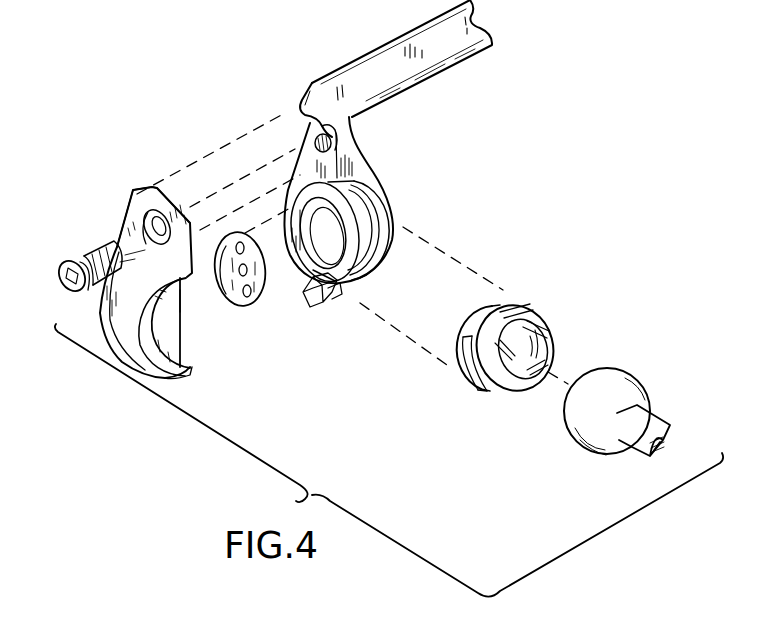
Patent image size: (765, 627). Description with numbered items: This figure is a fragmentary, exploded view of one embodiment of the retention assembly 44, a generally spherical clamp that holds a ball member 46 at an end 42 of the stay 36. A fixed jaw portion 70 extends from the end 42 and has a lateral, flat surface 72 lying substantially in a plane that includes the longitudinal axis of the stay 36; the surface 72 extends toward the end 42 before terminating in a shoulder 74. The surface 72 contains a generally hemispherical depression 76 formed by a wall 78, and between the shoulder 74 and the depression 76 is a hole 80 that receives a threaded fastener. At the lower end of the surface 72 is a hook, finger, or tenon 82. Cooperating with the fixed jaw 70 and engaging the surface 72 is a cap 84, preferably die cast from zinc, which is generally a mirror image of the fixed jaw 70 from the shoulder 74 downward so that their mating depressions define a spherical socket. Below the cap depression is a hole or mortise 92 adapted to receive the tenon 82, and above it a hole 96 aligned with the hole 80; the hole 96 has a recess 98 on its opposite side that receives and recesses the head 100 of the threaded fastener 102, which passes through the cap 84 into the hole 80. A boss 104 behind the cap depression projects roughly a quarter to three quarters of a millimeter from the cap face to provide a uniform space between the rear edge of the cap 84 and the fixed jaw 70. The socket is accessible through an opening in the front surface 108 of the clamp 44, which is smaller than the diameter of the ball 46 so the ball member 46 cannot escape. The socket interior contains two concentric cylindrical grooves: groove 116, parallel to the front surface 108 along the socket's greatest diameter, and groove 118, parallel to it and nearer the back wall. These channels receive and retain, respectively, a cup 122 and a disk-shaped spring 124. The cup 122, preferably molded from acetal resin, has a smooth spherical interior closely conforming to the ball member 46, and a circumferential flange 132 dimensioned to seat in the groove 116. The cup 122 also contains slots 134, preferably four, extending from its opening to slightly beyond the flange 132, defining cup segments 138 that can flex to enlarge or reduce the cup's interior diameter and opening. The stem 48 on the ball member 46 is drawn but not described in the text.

The stay 36 is at (443, 62).
The end 42 is at (310, 82).
The retention assembly 44 is at (414, 228).
The ball member 46 is at (610, 377).
The stem 48 is at (648, 421).
The fixed jaw portion 70 is at (368, 158).
The lateral flat surface 72 is at (300, 177).
The shoulder 74 is at (320, 130).
The hemispherical depression 76 is at (378, 268).
The wall 78 is at (370, 244).
The hole 80 is at (314, 143).
The hook, finger, or tenon 82 is at (322, 300).
The cap 84 is at (98, 337).
The hole or mortise 92 is at (190, 370).
The hole 96 is at (158, 228).
The recess 98 is at (145, 220).
The head 100 is at (64, 266).
The threaded fastener 102 is at (93, 255).
The boss 104 is at (185, 303).
The front surface 108 is at (381, 200).
The groove 116 is at (345, 196).
The groove or channel 118 is at (303, 292).
The cup 122 is at (538, 293).
The disk-shaped spring 124 is at (260, 306).
The circumferential flange 132 is at (511, 303).
The slots 134 is at (463, 337).
The cup segments 138 is at (472, 377).